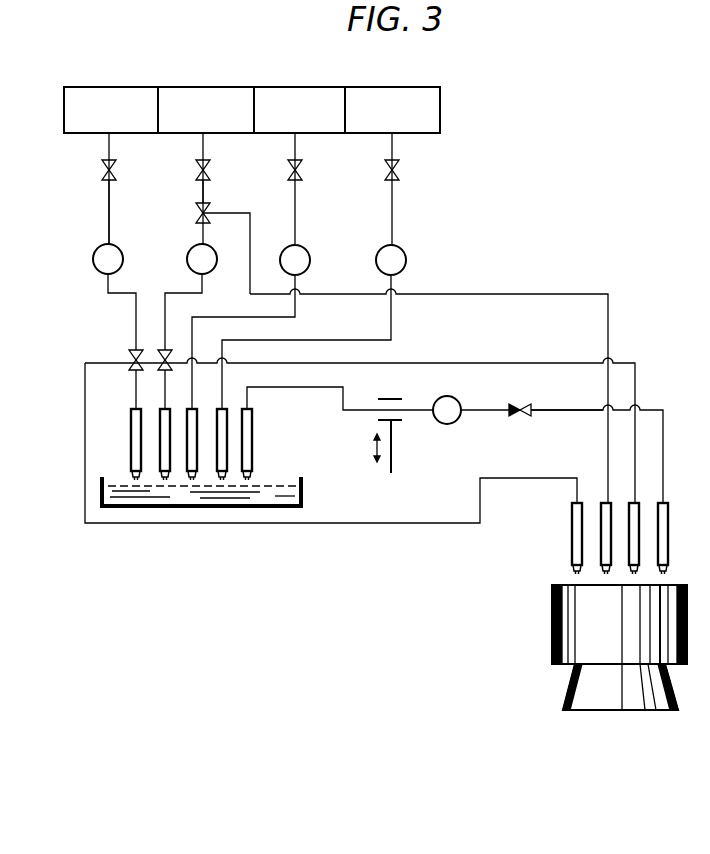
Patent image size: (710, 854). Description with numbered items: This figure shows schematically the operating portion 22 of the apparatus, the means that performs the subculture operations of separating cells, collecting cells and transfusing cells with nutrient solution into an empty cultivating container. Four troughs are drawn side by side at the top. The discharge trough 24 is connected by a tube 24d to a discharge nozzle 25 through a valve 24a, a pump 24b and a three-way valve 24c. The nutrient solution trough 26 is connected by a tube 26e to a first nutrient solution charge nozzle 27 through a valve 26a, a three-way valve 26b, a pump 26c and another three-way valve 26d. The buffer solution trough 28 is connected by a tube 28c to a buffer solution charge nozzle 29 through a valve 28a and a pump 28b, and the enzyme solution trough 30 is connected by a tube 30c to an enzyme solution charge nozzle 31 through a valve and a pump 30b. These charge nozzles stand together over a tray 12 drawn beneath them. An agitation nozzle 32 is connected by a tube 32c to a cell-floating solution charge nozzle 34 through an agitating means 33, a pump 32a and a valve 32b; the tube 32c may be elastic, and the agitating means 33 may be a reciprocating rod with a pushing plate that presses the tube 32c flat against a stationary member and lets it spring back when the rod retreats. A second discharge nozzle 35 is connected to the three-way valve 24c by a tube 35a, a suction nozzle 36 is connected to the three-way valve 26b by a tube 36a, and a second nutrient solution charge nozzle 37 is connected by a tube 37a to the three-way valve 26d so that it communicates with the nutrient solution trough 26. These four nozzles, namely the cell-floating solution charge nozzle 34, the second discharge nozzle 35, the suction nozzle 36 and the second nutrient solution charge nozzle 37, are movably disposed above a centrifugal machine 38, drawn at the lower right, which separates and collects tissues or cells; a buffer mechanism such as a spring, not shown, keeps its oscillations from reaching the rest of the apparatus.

The operating portion 22 is at (157, 62).
The discharge trough 24 is at (88, 93).
The nutrient solution trough 26 is at (185, 93).
The buffer solution trough 28 is at (281, 93).
The enzyme solution trough 30 is at (372, 93).
The valve 24a is at (116, 171).
The valve 26a is at (210, 171).
The valve 28a is at (302, 171).
The tube 24d is at (107, 207).
The pump 24b is at (101, 249).
The three-way valve 26b is at (196, 213).
The pump 26c is at (192, 249).
The pump 28b is at (304, 250).
The pump 30b is at (400, 250).
The tube 26e is at (185, 293).
The three-way valve 26d is at (171, 354).
The tube 28c is at (297, 312).
The tube 30c is at (393, 312).
The three-way valve 24c is at (131, 354).
The tube 36a is at (536, 295).
The tube 37a is at (527, 364).
The tube 35a is at (424, 525).
The discharge nozzle 25 is at (130, 411).
The first nutrient solution charge nozzle 27 is at (160, 411).
The buffer solution charge nozzle 29 is at (187, 411).
The enzyme solution charge nozzle 31 is at (216, 411).
The agitation nozzle 32 is at (253, 418).
The agitating means 33 is at (377, 416).
The pump 32a is at (455, 420).
The valve 32b is at (524, 419).
The tube 32c is at (550, 412).
The tray 12 is at (303, 498).
The second discharge nozzle 35 is at (571, 512).
The suction nozzle 36 is at (600, 504).
The second nutrient solution charge nozzle 37 is at (629, 508).
The cell-floating solution charge nozzle 34 is at (670, 511).
The centrifugal machine 38 is at (552, 602).